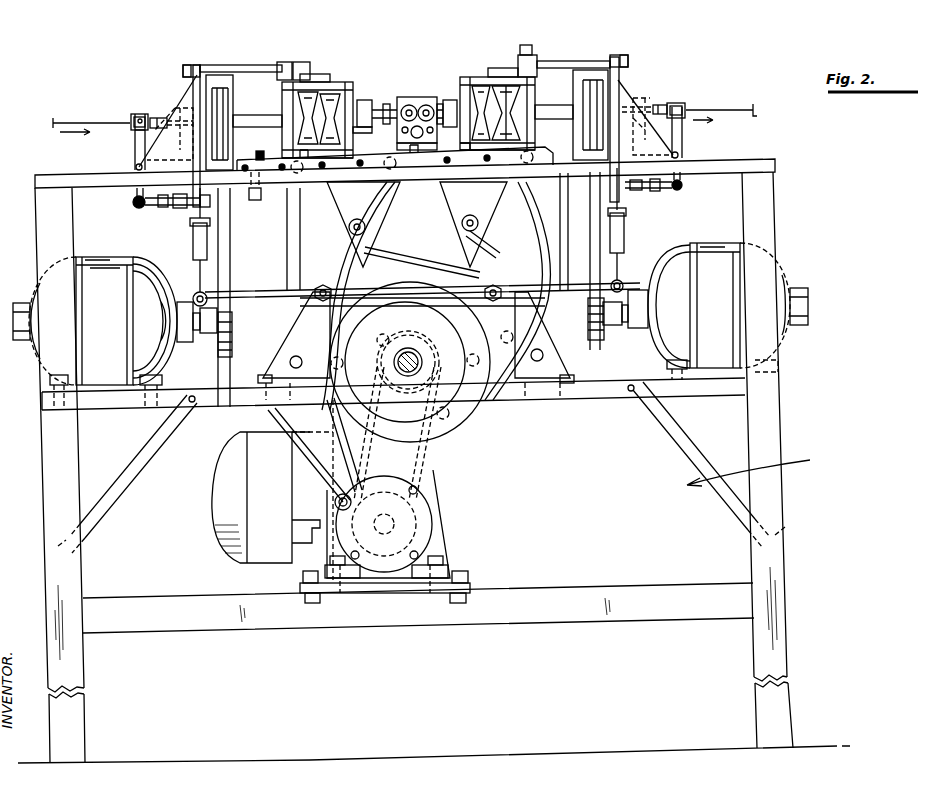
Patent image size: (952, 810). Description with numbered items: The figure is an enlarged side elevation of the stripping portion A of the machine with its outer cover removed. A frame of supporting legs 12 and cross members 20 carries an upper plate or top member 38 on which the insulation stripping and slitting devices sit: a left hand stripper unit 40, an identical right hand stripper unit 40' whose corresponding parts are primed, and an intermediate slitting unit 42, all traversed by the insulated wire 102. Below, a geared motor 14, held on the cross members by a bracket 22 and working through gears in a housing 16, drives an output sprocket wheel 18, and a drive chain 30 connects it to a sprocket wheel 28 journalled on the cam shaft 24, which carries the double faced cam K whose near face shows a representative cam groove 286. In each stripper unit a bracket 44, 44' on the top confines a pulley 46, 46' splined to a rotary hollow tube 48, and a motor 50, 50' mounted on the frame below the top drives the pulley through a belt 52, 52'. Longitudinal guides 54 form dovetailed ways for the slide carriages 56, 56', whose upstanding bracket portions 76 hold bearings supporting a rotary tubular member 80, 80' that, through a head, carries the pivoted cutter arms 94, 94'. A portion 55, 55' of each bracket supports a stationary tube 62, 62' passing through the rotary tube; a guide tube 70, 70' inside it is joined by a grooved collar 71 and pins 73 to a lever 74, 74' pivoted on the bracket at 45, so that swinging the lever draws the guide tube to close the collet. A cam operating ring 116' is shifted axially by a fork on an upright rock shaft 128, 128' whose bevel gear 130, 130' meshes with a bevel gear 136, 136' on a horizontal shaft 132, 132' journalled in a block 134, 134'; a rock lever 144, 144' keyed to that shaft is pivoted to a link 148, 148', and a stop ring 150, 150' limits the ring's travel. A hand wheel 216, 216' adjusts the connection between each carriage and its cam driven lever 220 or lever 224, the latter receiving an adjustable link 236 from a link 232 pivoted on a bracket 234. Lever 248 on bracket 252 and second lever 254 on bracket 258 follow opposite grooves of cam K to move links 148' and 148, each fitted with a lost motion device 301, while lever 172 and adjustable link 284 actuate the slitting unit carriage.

The supporting legs 12 is at (84, 556).
The geared motor 14 is at (222, 475).
The housing 16 is at (432, 490).
The output sprocket wheel 18 is at (420, 508).
The cross members 20 is at (766, 226).
The bracket 22 is at (436, 556).
The cam shaft 24 is at (413, 350).
The sprocket wheel 28 is at (424, 440).
The drive chain 30 is at (424, 470).
The top member 38 is at (66, 178).
The left hand stripper unit 40 is at (317, 79).
The right hand stripper unit 40' is at (530, 79).
The intermediate slitting unit 42 is at (410, 97).
The bracket 44 is at (168, 121).
The bracket 44' is at (648, 112).
The pivot 45 is at (135, 167).
The pulley 46 is at (200, 123).
The pulley 46' is at (631, 129).
The rotary hollow shaft or tube 48 is at (258, 115).
The motor 50 is at (122, 321).
The motor 50' is at (705, 297).
The belt 52 is at (236, 297).
The belt 52' is at (578, 261).
The guides 54 is at (270, 158).
The portion of bracket 55 is at (170, 134).
The portion of bracket 55' is at (646, 126).
The slide carriage 56 is at (368, 135).
The slide carriage 56' is at (455, 101).
The stationary tube 62 is at (163, 107).
The stationary tube 62' is at (662, 93).
The guide tube 70 is at (130, 110).
The guide tube 70' is at (689, 104).
The grooved collar 71 is at (131, 118).
The pins 73 is at (133, 130).
The lever 74 is at (120, 155).
The lever 74' is at (697, 143).
The upstanding bracket portions 76 is at (282, 96).
The tubular member 80 is at (368, 105).
The tubular member 80' is at (449, 103).
The cutter arms 94 is at (386, 103).
The cutter arms 94' is at (428, 98).
The insulated wire 102 is at (54, 118).
The cam operating ring 116' is at (571, 115).
The rock shaft 128 is at (324, 96).
The rock shaft 128' is at (531, 113).
The bevel gear 130 is at (324, 55).
The bevel gear 130' is at (503, 52).
The horizontal shaft 132 is at (241, 50).
The horizontal shaft 132' is at (579, 48).
The block 134 is at (279, 41).
The block 134' is at (544, 54).
The bevel gear 136 is at (303, 54).
The bevel gear 136' is at (535, 36).
The rock lever 144 is at (181, 53).
The rock lever 144' is at (633, 39).
The link 148 is at (180, 247).
The link 148' is at (641, 230).
The stop ring 150 is at (346, 98).
The stop ring 150' is at (483, 95).
The lever 172 is at (392, 222).
The hand wheel 216 is at (249, 196).
The hand wheel 216' is at (555, 231).
The lever 220 is at (292, 258).
The lever 224 is at (534, 222).
The link 232 is at (350, 460).
The bracket 234 is at (296, 460).
The adjustable link 236 is at (426, 264).
The lever 248 is at (552, 298).
The bracket 252 is at (568, 366).
The second lever 254 is at (250, 306).
The bracket 258 is at (268, 362).
The adjustable link 284 is at (500, 252).
The cam groove 286 is at (416, 310).
The lost motion device 301 is at (175, 207).
The cam K is at (466, 420).
The machine portion A is at (748, 465).